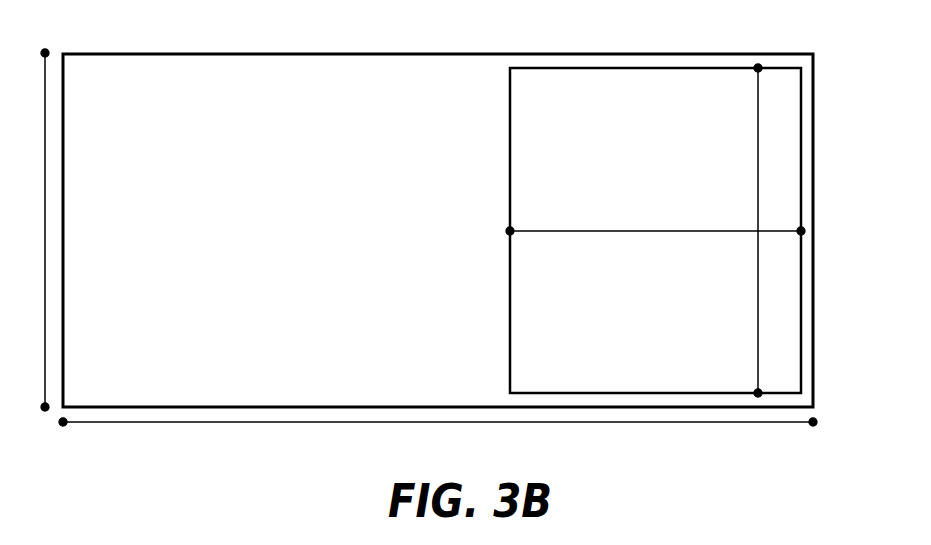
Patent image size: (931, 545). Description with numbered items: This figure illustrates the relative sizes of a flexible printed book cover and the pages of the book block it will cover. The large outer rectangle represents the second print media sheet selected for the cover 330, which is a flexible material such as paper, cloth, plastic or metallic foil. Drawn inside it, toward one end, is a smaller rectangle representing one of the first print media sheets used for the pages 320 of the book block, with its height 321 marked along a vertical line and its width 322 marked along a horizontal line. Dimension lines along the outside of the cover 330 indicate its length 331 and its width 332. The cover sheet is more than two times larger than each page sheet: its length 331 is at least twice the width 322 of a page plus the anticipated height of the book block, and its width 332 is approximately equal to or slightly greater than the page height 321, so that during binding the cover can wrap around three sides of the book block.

The pages 320 is at (588, 86).
The height 321 is at (758, 160).
The width 322 is at (655, 232).
The cover 330 is at (816, 85).
The length 331 is at (440, 423).
The width 332 is at (46, 88).